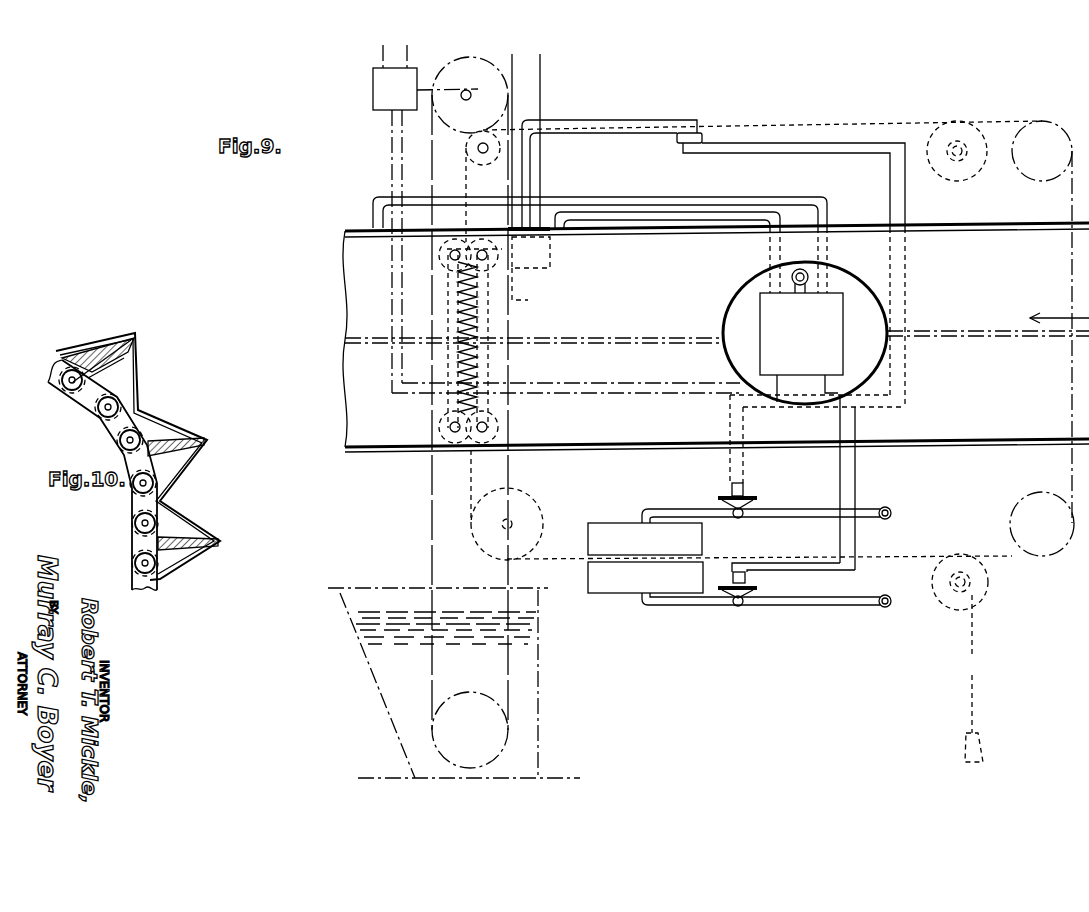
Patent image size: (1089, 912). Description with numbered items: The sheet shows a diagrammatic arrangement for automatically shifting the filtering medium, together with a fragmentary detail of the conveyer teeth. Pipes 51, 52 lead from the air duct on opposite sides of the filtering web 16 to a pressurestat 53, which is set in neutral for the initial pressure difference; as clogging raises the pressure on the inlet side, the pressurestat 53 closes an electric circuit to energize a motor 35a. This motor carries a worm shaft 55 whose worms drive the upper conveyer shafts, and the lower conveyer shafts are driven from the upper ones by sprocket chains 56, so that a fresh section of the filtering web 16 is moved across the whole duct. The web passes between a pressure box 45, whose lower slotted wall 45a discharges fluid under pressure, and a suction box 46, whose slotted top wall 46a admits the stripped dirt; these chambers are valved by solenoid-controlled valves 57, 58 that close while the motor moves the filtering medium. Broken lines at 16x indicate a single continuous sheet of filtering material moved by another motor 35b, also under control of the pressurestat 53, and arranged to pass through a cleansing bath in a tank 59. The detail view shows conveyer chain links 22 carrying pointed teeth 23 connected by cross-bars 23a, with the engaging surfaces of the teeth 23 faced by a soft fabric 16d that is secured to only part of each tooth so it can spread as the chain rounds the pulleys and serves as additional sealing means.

In FIG. 9, the roll of filtering media 16 is at (466, 186).
In FIG. 9, the single continuous sheet or web of filtering material 16x is at (433, 489).
In FIG. 10, the soft fabric facing 16d is at (140, 358).
In FIG. 10, the chain links 22 is at (142, 503).
In FIG. 10, the pointed teeth 23 is at (178, 533).
In FIG. 10, the cross-bars or blades 23a is at (113, 379).
In FIG. 9, the motor 35a is at (550, 257).
In FIG. 9, the motor 35b is at (373, 92).
In FIG. 9, the pressure box 45 is at (645, 539).
In FIG. 9, the suction box 46 is at (645, 577).
In FIG. 9, the lower slotted wall 45a is at (766, 505).
In FIG. 9, the slotted top wall 46a is at (766, 608).
In FIG. 9, the pipe 51 is at (681, 224).
In FIG. 9, the pipe 52 is at (579, 198).
In FIG. 9, the pressurestat 53 is at (805, 333).
In FIG. 9, the worm shaft 55 is at (550, 268).
In FIG. 9, the sprocket chains 56 is at (490, 352).
In FIG. 9, the valve 57 is at (737, 466).
In FIG. 9, the valve 58 is at (786, 510).
In FIG. 9, the tank 59 is at (538, 667).